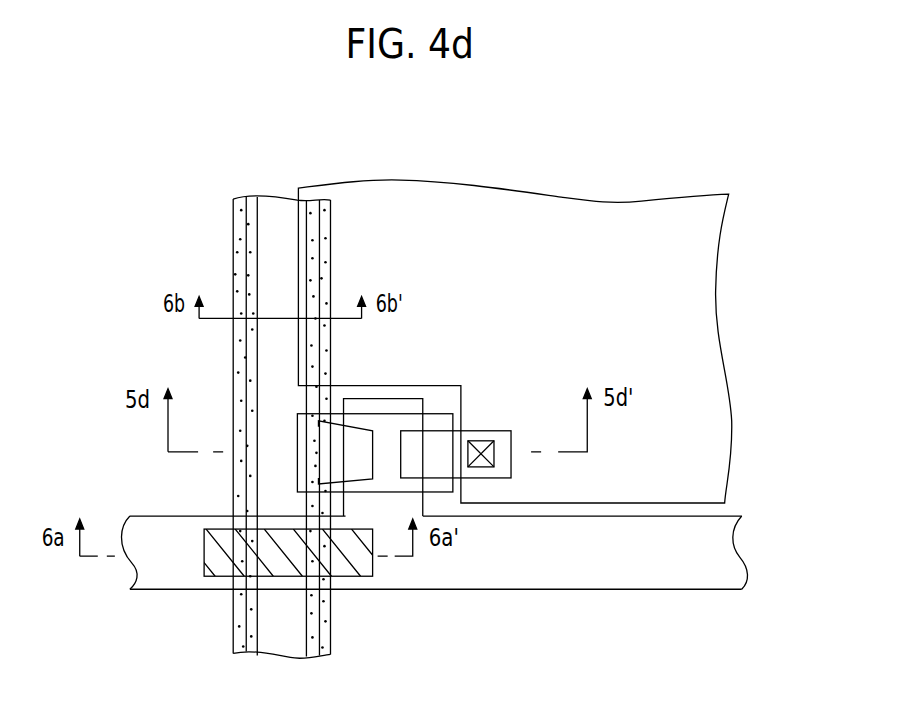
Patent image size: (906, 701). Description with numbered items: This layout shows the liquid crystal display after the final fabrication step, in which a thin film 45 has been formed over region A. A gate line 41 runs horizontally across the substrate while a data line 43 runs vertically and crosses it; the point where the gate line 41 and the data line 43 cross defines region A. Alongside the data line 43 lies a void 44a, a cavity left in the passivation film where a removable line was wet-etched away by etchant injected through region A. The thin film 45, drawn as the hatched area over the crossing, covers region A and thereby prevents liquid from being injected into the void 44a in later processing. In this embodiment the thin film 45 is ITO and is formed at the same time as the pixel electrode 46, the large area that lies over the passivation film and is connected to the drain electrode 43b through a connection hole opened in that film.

The gate line 41 is at (722, 556).
The data line 43 is at (283, 222).
The drain electrode 43b is at (503, 440).
The void 44a is at (322, 245).
The thin film 45 is at (212, 530).
The pixel electrode 46 is at (697, 243).